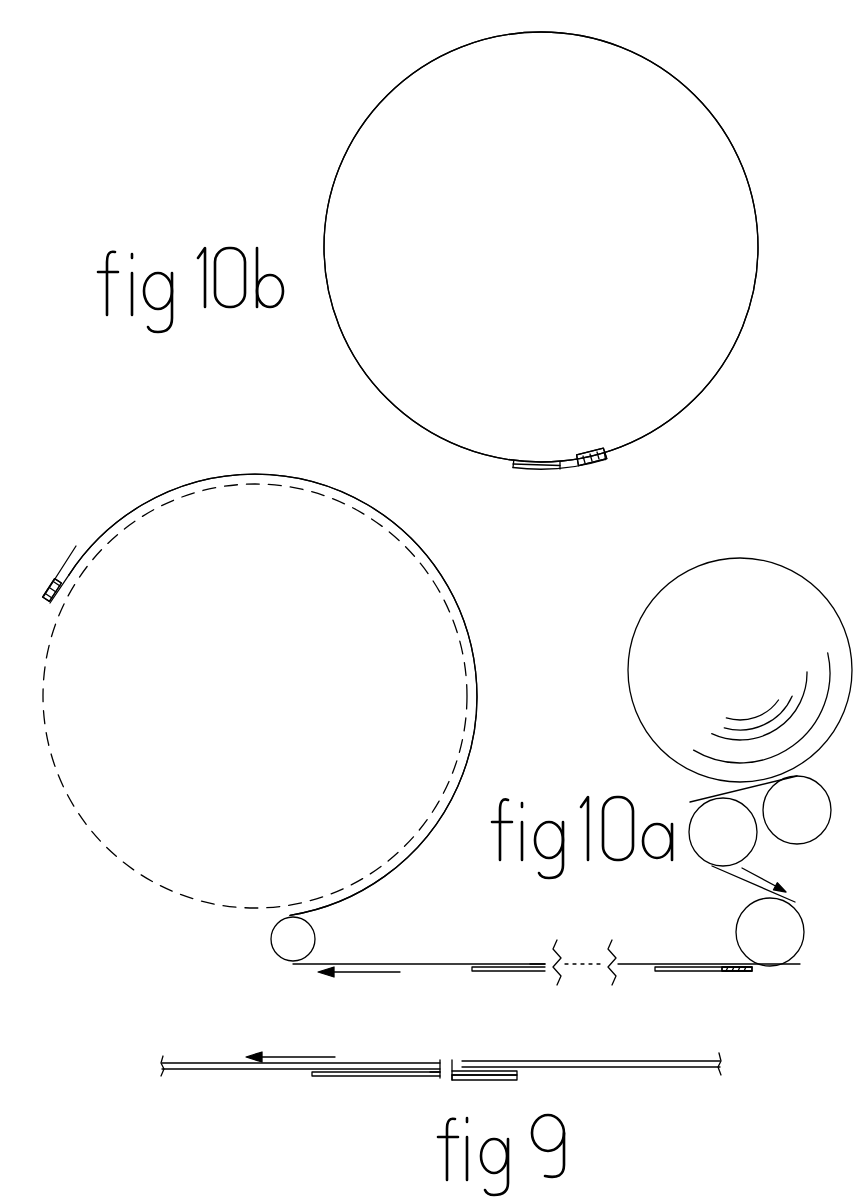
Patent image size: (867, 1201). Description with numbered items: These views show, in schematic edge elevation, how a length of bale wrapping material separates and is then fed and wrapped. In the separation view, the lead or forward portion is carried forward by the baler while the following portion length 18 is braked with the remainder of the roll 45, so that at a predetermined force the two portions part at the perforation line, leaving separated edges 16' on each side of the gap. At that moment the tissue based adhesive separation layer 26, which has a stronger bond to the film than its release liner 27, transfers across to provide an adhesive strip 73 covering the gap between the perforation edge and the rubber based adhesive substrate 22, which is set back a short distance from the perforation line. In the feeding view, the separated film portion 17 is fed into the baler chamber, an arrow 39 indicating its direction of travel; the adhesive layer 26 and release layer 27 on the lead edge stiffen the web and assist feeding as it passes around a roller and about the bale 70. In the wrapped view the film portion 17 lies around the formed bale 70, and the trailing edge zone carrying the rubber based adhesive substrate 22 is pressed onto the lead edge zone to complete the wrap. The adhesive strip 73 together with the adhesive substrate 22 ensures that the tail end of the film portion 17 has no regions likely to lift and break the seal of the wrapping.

In FIG. 9, the web end / transition point 16' is at (453, 1044).
In FIG. 10B, the separated film portion 17 is at (756, 264).
In FIG. 10A, the separated film portion 17 is at (477, 700).
In FIG. 9, the separated film portion 17 is at (227, 1072).
In FIG. 9, the following portion length 18 is at (630, 1067).
In FIG. 10B, the rubber based adhesive substrate 22 is at (563, 469).
In FIG. 10A, the rubber based adhesive substrate 22 is at (502, 964).
In FIG. 9, the rubber based adhesive substrate 22 is at (345, 1077).
In FIG. 10B, the tissue based adhesive separation layer 26 is at (596, 466).
In FIG. 10A, the tissue based adhesive separation layer 26 is at (70, 590).
In FIG. 9, the tissue based adhesive separation layer 26 is at (520, 1063).
In FIG. 10B, the release liner 27 is at (592, 456).
In FIG. 10A, the release liner 27 is at (397, 775).
In FIG. 9, the release liner 27 is at (490, 1082).
In FIG. 10A, the web running direction 39 is at (735, 880).
In FIG. 10A, the roll 45 is at (672, 623).
In FIG. 10B, the bale 70 is at (433, 337).
In FIG. 10A, the bale 70 is at (216, 527).
In FIG. 10B, the adhesive strip 73 is at (521, 470).
In FIG. 10A, the adhesive strip 73 is at (545, 962).
In FIG. 9, the adhesive strip 73 is at (432, 1079).